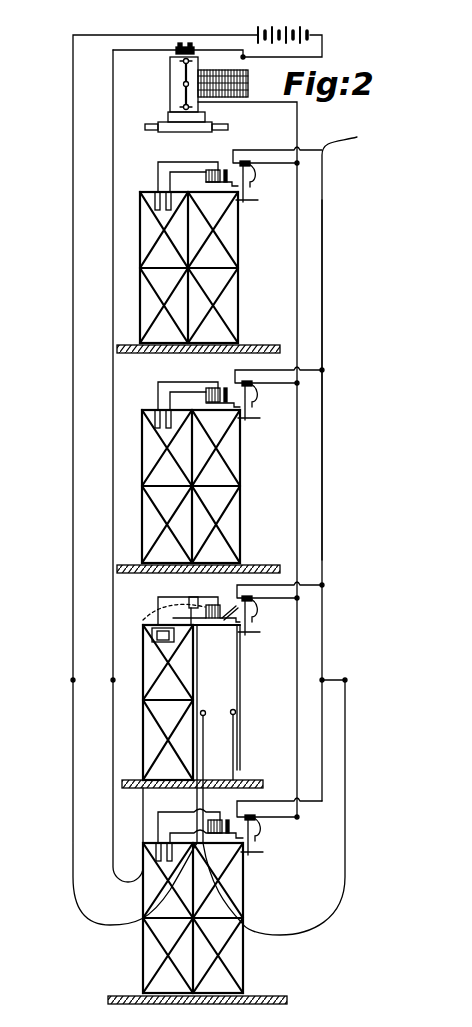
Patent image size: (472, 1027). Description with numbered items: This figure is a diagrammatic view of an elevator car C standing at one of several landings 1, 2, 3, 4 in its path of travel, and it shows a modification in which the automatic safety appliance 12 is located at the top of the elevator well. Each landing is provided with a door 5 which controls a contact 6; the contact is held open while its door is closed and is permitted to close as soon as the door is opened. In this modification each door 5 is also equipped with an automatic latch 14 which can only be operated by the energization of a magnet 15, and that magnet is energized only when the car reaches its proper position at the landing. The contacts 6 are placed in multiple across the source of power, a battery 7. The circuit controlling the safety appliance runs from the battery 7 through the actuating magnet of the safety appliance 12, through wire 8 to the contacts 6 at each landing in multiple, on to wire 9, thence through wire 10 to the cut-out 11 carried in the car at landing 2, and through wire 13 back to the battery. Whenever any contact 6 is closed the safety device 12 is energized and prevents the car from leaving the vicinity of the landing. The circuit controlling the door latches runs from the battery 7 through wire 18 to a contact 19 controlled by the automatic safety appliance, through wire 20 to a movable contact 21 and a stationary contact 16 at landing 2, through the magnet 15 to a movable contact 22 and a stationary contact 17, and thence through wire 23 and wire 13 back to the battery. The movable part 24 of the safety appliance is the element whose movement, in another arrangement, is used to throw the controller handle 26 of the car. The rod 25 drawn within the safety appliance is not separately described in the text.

The landing 1 is at (108, 998).
The landing 2 is at (122, 783).
The landing 3 is at (117, 566).
The landing 4 is at (117, 348).
The door 5 is at (238, 283).
The contact 6 is at (258, 190).
The battery 7 is at (282, 23).
The wire 8 is at (297, 128).
The wire 9 is at (322, 243).
The wire 10 is at (345, 725).
The cut-out 11 is at (205, 712).
The automatic safety appliance 12 is at (247, 459).
The wire 13 is at (73, 510).
The automatic latch 14 is at (226, 170).
The magnet 15 is at (212, 170).
The stationary contact 16 is at (157, 198).
The stationary contact 17 is at (169, 172).
The wire 18 is at (226, 50).
The contact 19 is at (186, 46).
The wire 20 is at (114, 483).
The movable contact 21 is at (150, 620).
The movable contact 22 is at (170, 622).
The wire 23 is at (197, 658).
The part of automatic safety appliance 24 is at (170, 125).
The switch rod 25 is at (183, 85).
The controller handle 26 is at (233, 745).
The car C is at (222, 673).